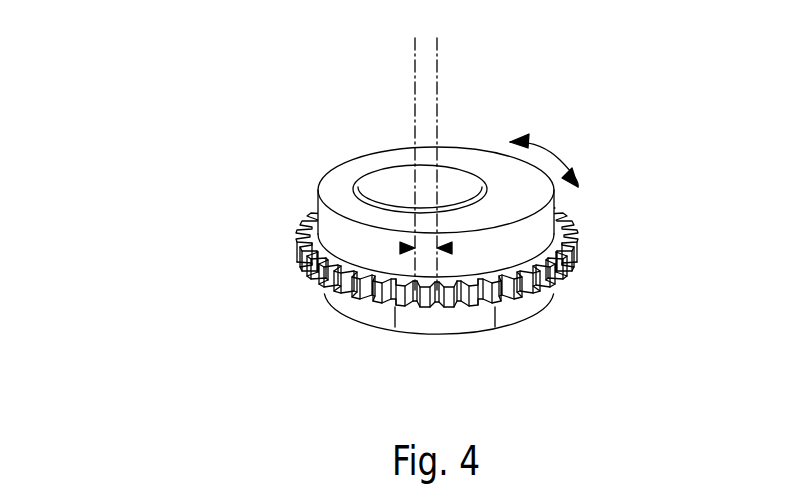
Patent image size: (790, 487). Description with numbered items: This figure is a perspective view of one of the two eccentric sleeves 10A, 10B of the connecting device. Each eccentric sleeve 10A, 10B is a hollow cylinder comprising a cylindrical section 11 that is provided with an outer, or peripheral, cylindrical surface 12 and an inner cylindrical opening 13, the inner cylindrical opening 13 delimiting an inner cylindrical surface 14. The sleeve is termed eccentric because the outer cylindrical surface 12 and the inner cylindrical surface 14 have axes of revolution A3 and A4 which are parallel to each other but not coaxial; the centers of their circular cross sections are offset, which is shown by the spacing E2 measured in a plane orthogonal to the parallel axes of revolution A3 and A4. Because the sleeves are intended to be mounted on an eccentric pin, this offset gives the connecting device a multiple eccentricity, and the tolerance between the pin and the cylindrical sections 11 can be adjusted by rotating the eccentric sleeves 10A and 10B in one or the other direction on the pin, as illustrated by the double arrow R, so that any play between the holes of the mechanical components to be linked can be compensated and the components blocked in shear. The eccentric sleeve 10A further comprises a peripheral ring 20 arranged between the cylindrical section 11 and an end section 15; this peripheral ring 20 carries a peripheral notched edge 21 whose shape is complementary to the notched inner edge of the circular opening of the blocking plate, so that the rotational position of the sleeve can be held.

The eccentric sleeve 10A is at (373, 221).
The eccentric sleeve 10B is at (373, 221).
The cylindrical section 11 is at (303, 195).
The outer cylindrical surface 12 is at (558, 207).
The inner cylindrical opening 13 is at (378, 192).
The inner cylindrical surface 14 is at (478, 195).
The end section 15 is at (352, 305).
The peripheral ring 20 is at (586, 255).
The peripheral notched edge 21 is at (553, 280).
The axis of revolution A3 is at (440, 90).
The axis of revolution A4 is at (415, 90).
The double arrow R is at (550, 158).
The spacing E2 is at (426, 326).